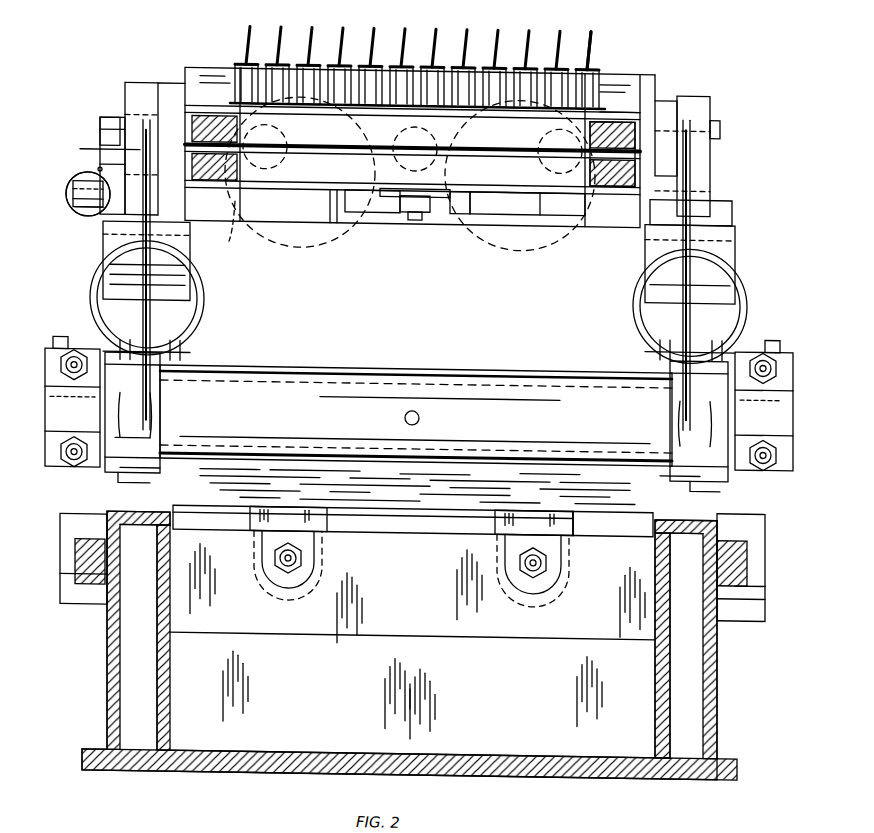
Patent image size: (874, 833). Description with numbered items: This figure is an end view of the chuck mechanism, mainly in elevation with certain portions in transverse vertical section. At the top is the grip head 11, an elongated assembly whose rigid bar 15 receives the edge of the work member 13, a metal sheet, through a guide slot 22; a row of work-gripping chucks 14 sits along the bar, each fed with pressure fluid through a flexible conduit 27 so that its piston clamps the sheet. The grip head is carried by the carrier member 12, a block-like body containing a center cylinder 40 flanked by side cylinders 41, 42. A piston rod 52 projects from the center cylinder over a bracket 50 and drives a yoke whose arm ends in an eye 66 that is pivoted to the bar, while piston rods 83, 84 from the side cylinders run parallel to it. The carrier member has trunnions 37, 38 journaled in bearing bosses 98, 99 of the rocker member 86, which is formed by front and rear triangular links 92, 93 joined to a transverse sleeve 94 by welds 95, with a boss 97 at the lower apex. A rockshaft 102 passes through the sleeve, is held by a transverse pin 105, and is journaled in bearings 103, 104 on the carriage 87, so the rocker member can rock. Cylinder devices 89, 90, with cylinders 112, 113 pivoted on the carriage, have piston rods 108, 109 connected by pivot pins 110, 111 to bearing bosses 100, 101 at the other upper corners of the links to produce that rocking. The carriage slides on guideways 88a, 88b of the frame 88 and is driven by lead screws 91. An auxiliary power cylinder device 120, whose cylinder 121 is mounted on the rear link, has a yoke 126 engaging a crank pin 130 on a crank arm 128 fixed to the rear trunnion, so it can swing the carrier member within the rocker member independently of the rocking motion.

The grip head 11 is at (612, 112).
The carrier member 12 is at (214, 64).
The work member 13 is at (310, 135).
The work-gripping chucks 14 is at (470, 66).
The rigid bar 15 is at (610, 125).
The guide slot 22 is at (455, 128).
The flexible conduit 27 is at (592, 52).
The trunnion 37 is at (720, 130).
The trunnion 38 is at (122, 118).
The center cylinder 40 is at (333, 218).
The side cylinder 41 is at (576, 216).
The side cylinder 42 is at (237, 222).
The bracket 50 is at (415, 210).
The piston rod 52 is at (450, 210).
The boss or eye 66 is at (392, 205).
The piston rod 83 is at (528, 215).
The piston rod 84 is at (230, 215).
The rocker member 86 is at (697, 268).
The carriage 87 is at (765, 513).
The frame or base 88 is at (720, 658).
The guideway 88a is at (690, 520).
The guideway 88b is at (180, 512).
The cylinder device 89 is at (748, 296).
The cylinder device 90 is at (207, 296).
The lead screw 91 is at (538, 575).
The front link or bracket 92 is at (690, 250).
The rear link or bracket 93 is at (135, 315).
The transverse sleeve 94 is at (345, 372).
The weld 95 is at (165, 415).
The boss 97 is at (150, 476).
The bearing boss 98 is at (690, 95).
The bearing boss 99 is at (146, 83).
The bearing boss 100 is at (712, 215).
The bearing boss 101 is at (115, 248).
The rockshaft 102 is at (440, 392).
The bearing 103 is at (792, 356).
The bearing 104 is at (46, 356).
The transverse pin 105 is at (419, 418).
The piston rod 108 is at (715, 320).
The piston rod 109 is at (185, 318).
The pivot pin 110 is at (645, 255).
The pivot pin 111 is at (105, 270).
The cylinder 112 is at (735, 345).
The cylinder 113 is at (190, 352).
The auxiliary power cylinder device 120 is at (98, 170).
The cylinder 121 is at (73, 208).
The yoke 126 is at (78, 215).
The crank arm 128 is at (90, 157).
The crank pin 130 is at (105, 135).